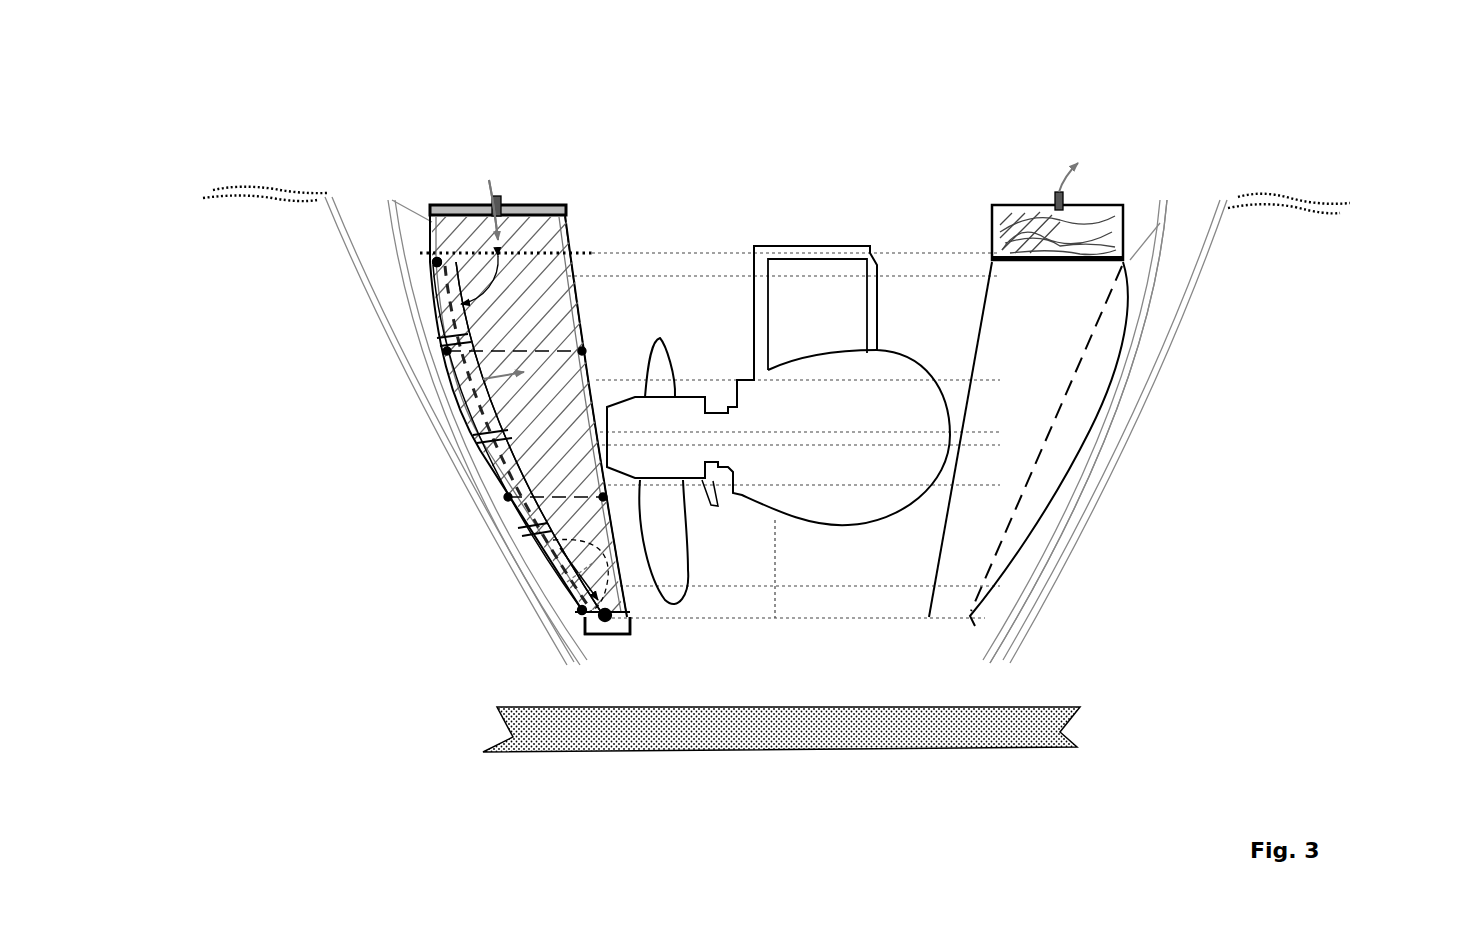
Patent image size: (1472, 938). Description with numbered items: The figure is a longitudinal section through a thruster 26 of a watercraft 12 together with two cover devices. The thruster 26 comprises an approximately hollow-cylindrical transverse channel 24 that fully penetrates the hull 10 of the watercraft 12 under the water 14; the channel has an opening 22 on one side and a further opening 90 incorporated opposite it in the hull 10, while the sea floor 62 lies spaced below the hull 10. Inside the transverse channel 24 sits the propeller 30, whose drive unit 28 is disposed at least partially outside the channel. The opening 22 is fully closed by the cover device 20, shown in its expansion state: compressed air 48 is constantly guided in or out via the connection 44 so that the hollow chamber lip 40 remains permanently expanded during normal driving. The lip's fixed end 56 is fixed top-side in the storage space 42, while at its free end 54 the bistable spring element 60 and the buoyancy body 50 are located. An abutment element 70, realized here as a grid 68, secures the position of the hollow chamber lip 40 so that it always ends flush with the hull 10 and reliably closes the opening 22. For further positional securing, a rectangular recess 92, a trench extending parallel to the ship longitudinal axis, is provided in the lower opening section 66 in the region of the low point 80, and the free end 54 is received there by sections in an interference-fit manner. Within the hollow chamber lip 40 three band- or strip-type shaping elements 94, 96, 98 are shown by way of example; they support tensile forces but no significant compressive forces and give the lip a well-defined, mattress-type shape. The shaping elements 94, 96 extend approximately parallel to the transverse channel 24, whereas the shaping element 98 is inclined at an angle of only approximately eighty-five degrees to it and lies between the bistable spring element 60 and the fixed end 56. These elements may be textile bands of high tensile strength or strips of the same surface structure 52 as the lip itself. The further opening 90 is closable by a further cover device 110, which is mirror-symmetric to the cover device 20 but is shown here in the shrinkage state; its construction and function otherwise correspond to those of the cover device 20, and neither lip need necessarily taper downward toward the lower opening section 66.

The hull 10 is at (1197, 244).
The watercraft 12 is at (1078, 431).
The water 14 is at (285, 187).
The cover device 20 is at (483, 379).
The opening 22 is at (437, 323).
The transverse channel 24 is at (927, 297).
The thruster 26 is at (797, 188).
The drive unit 28 is at (823, 308).
The propeller 30 is at (659, 375).
The hollow chamber lip 40 is at (535, 450).
The storage space 42 is at (437, 222).
The connection 44 is at (512, 206).
The compressed air 48 is at (487, 178).
The buoyancy body 50 is at (580, 609).
The surface structure 52 is at (595, 299).
The free end 54 is at (597, 614).
The fixed end 56 is at (568, 227).
The bistable spring element 60 is at (579, 628).
The sea floor 62 is at (790, 738).
The lower opening section 66 is at (580, 636).
The grid 68 is at (435, 292).
The abutment element 70 is at (437, 262).
The low point 80 is at (560, 545).
The further opening 90 is at (1115, 350).
The recess 92 is at (612, 636).
The shaping element 94 is at (447, 351).
The shaping element 96 is at (508, 497).
The shaping element 98 is at (495, 412).
The further cover device 110 is at (1104, 194).